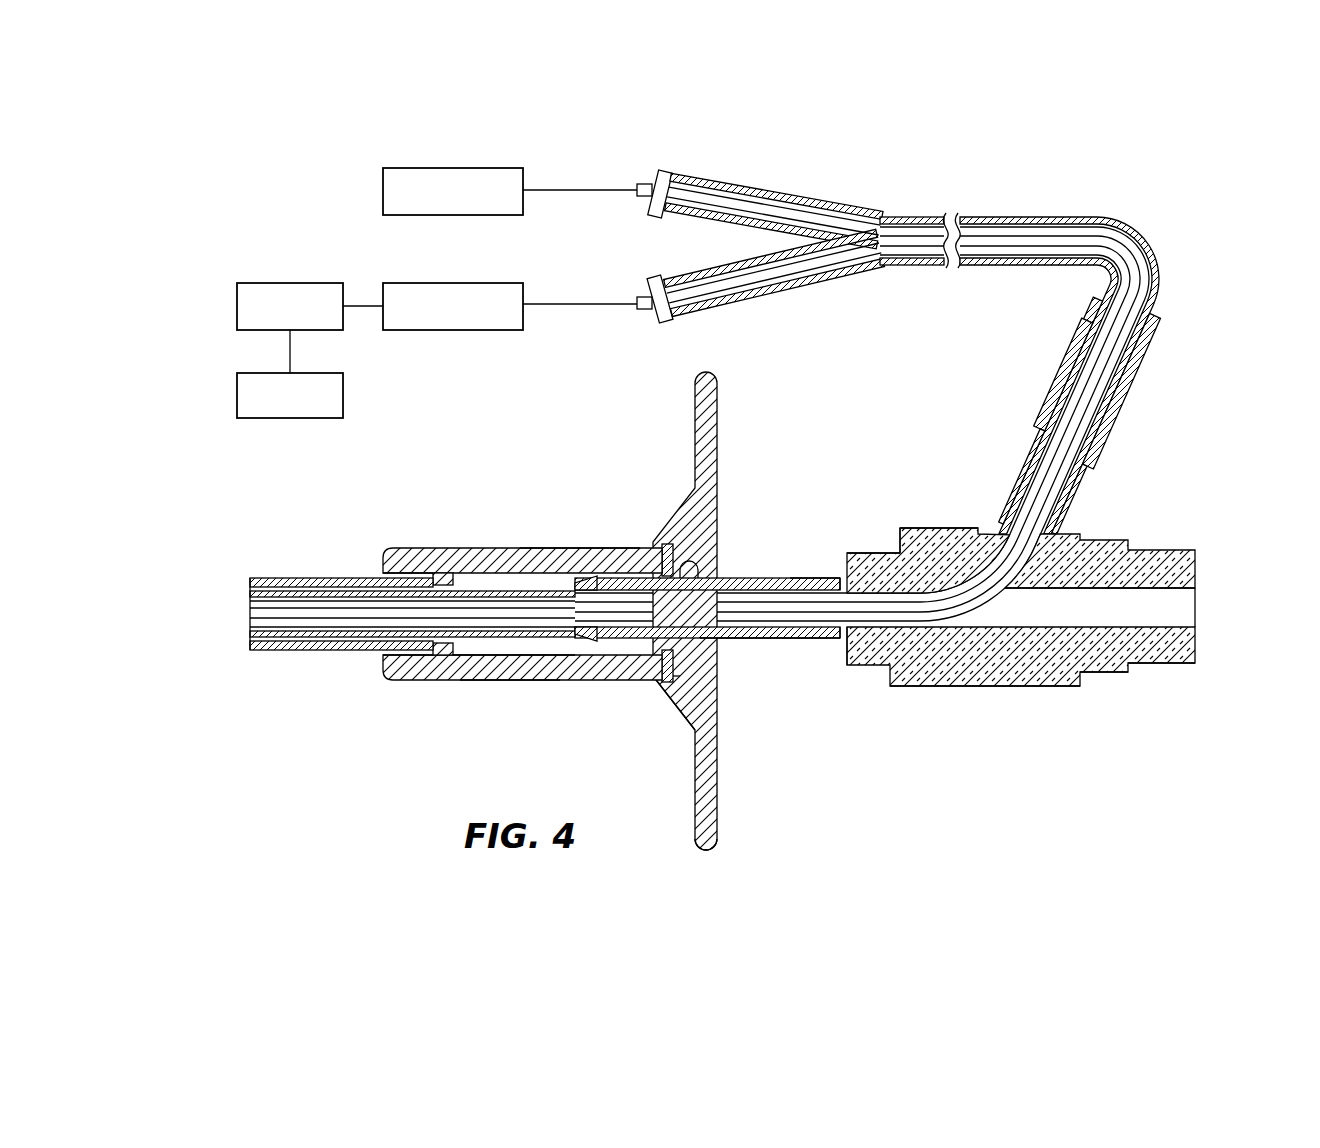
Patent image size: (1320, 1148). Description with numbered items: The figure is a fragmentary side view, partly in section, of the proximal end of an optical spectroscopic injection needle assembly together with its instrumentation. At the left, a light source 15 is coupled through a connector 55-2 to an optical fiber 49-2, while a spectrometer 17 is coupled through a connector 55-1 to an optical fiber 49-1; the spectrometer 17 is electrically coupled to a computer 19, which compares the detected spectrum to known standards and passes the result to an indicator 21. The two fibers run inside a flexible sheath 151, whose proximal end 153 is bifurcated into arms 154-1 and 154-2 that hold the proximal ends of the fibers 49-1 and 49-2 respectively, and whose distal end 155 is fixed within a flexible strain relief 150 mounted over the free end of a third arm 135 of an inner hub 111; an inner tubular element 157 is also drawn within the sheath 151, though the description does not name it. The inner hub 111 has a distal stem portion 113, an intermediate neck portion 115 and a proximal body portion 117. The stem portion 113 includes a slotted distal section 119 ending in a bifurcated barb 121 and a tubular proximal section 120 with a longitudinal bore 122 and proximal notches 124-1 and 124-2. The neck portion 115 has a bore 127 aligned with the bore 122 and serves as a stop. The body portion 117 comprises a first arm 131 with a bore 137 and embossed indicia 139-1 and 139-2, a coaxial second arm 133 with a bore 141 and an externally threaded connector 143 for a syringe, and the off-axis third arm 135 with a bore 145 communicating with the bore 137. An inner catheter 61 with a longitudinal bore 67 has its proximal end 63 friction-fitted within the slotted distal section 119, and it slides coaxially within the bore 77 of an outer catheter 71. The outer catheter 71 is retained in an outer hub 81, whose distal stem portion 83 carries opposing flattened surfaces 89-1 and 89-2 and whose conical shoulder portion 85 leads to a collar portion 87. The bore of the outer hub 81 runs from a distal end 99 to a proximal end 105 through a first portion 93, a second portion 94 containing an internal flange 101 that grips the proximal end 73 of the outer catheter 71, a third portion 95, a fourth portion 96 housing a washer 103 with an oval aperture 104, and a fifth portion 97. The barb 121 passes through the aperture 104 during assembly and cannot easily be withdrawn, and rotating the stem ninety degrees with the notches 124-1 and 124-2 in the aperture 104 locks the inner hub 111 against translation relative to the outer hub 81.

The light source 15 is at (383, 194).
The spectrometer 17 is at (425, 283).
The computer 19 is at (237, 308).
The indicator 21 is at (237, 398).
The connector 55-1 is at (652, 305).
The connector 55-2 is at (650, 186).
The optical fiber 49-1 is at (686, 292).
The optical fiber 49-2 is at (745, 205).
The arm of sheath proximal end 154-1 is at (745, 292).
The arm of sheath proximal end 154-2 is at (831, 206).
The proximal end of sheath 153 is at (866, 286).
The sheath 151 is at (1020, 214).
The inner tube 157 is at (1091, 236).
The distal end of sheath 155 is at (1089, 310).
The bore of third arm 145 is at (1064, 388).
The strain relief 150 is at (1122, 400).
The third arm 135 is at (1088, 487).
The second arm 133 is at (1112, 540).
The first arm 131 is at (989, 530).
The inner hub 111 is at (880, 690).
The embossed indicia 139-1 is at (950, 527).
The embossed indicia 139-2 is at (955, 688).
The longitudinal bore of neck portion 127 is at (898, 590).
The intermediate neck portion 115 is at (868, 552).
The bore of first arm 137 is at (905, 688).
The bore of second arm 141 is at (1172, 608).
The externally threaded connector 143 is at (1174, 666).
The proximal body portion 117 is at (1108, 675).
The proximal end of outer hub 105 is at (695, 425).
The proximal collar portion 87 is at (718, 846).
The washer 103 is at (668, 700).
The intermediate shoulder portion 85 is at (676, 728).
The tubular proximal section 120 is at (778, 576).
The longitudinal bore 122 is at (745, 640).
The distal stem portion 113 is at (813, 577).
The proximal notch 124-1 is at (843, 576).
The proximal notch 124-2 is at (842, 640).
The oval aperture 104 is at (700, 565).
The fifth portion of longitudinal bore 97 is at (668, 543).
The fourth portion of longitudinal bore 96 is at (661, 545).
The proximal end of inner catheter 63 is at (660, 668).
The flattened surface 89-1 is at (400, 681).
The flattened surface 89-2 is at (490, 547).
The internal flange 101 is at (440, 572).
The second portion of longitudinal bore 94 is at (420, 656).
The first portion of longitudinal bore 93 is at (383, 566).
The distal end of outer hub 99 is at (383, 662).
The outer hub 81 is at (586, 532).
The distal stem portion 83 is at (503, 682).
The third portion of longitudinal bore 95 is at (472, 657).
The inner catheter 61 is at (436, 650).
The proximal end of outer catheter 73 is at (468, 591).
The bifurcated barb 121 is at (578, 580).
The slotted distal section 119 is at (578, 643).
The outer catheter 71 is at (254, 577).
The longitudinal bore of outer catheter 77 is at (270, 650).
The longitudinal bore of inner catheter 67 is at (280, 618).